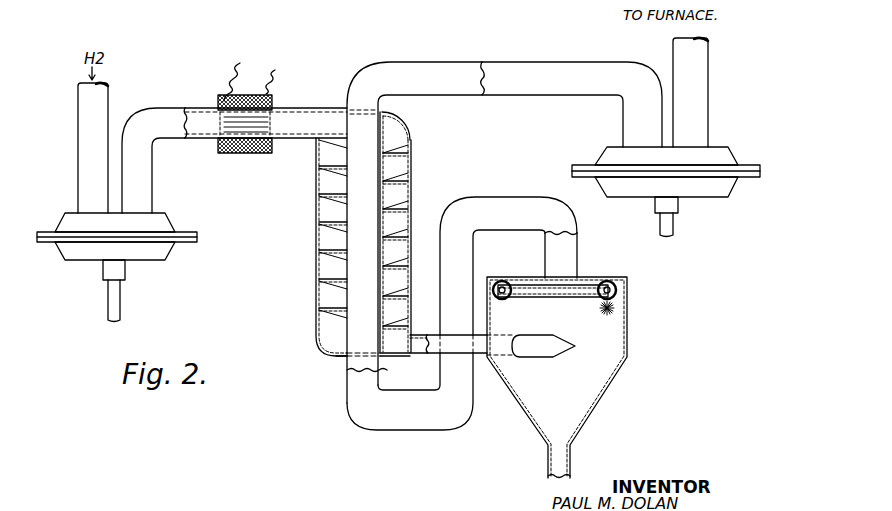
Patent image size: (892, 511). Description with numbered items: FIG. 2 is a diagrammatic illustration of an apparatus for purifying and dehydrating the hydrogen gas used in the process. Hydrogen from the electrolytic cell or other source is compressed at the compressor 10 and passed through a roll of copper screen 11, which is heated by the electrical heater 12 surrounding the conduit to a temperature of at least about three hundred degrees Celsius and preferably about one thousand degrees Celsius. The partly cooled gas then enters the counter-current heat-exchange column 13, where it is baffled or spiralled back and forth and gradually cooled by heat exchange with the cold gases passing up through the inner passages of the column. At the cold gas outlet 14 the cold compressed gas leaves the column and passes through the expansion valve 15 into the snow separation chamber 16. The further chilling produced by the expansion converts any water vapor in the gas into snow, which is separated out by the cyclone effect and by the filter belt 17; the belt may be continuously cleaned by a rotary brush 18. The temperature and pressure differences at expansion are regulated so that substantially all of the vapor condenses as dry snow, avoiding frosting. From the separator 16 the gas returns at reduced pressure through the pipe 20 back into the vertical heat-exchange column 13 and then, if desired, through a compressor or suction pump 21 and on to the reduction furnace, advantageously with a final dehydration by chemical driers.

The compressor 10 is at (155, 262).
The roll of copper screen 11 is at (262, 128).
The electrical heater 12 is at (226, 158).
The counter-current heat-exchange column 13 is at (383, 138).
The cold gas outlet 14 is at (480, 357).
The expansion valve 15 is at (562, 353).
The snow separation chamber 16 is at (628, 342).
The filter belt 17 is at (540, 300).
The rotary brush 18 is at (616, 310).
The gas pipe to separator 20 is at (579, 248).
The compressor or suction pump 21 is at (707, 197).